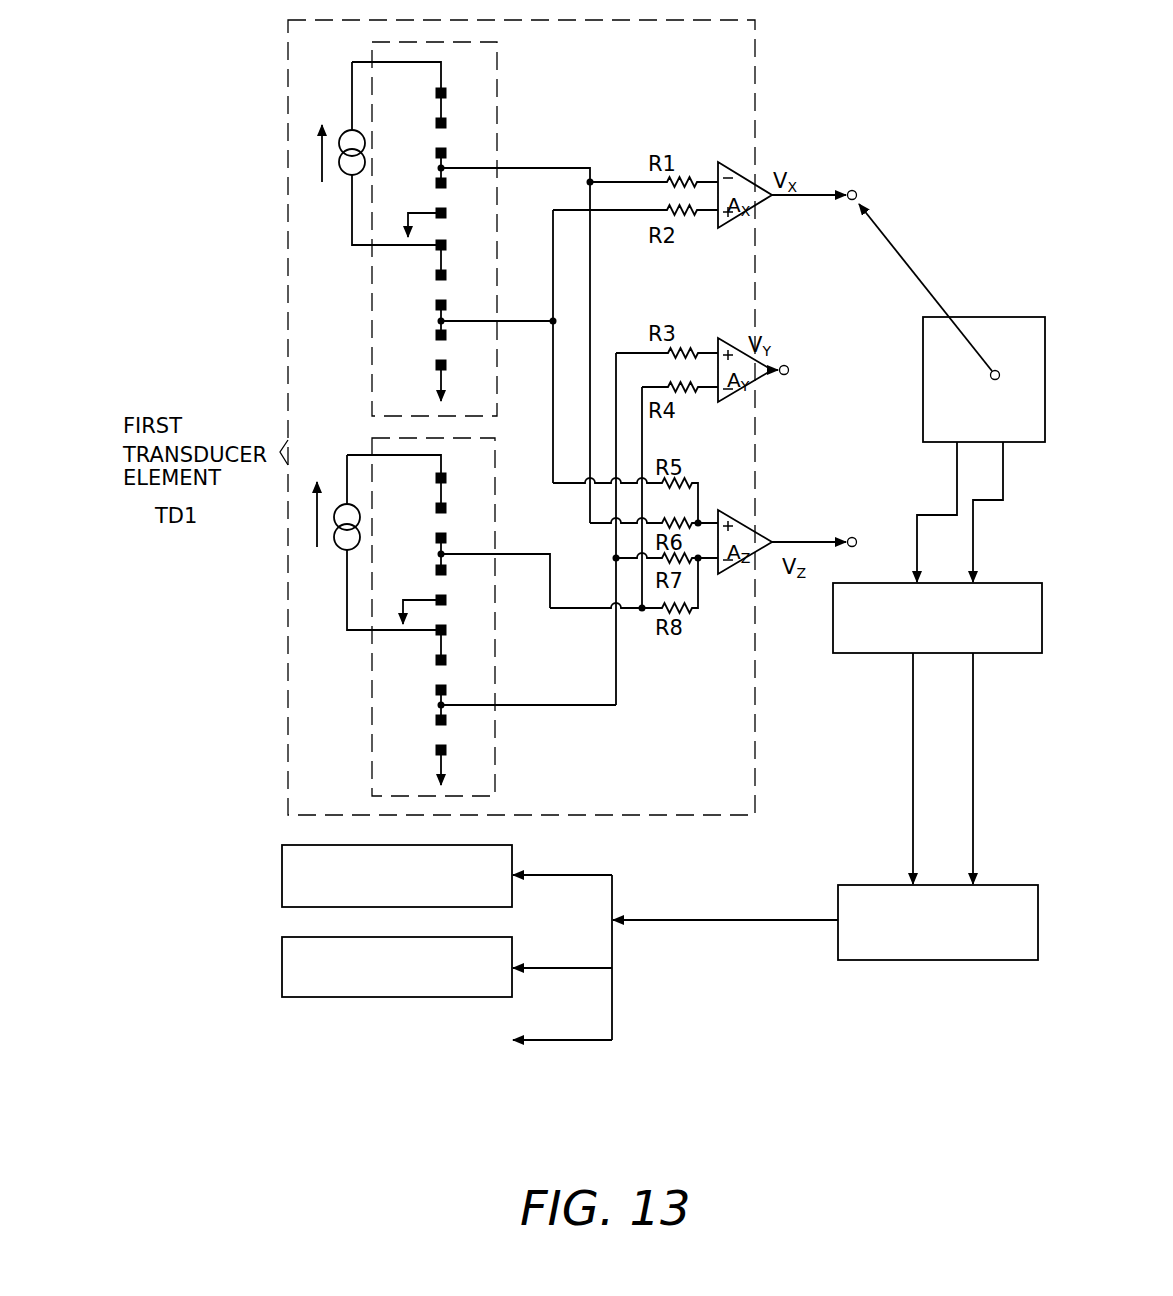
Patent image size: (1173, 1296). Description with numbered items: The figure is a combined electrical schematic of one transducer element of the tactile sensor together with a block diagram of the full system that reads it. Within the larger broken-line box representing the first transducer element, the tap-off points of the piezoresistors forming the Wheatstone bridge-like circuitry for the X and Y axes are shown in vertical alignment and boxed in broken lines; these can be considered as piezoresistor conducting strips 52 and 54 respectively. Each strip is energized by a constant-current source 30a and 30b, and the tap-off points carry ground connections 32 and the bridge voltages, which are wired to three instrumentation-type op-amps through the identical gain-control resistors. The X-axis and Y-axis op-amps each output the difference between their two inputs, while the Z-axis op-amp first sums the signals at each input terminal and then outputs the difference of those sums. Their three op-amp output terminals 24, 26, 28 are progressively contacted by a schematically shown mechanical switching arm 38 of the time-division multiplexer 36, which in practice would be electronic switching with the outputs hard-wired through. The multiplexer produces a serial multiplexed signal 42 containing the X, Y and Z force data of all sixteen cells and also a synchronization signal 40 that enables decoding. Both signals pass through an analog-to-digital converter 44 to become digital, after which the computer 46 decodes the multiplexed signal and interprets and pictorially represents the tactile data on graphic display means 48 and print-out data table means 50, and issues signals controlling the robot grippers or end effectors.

The op-amp output terminal 24 is at (855, 190).
The op-amp output terminal 26 is at (789, 364).
The op-amp output terminal 28 is at (851, 537).
The constant-current source 30a is at (347, 562).
The constant-current source 30b is at (352, 180).
The ground connection 32 is at (405, 230).
The time-division multiplexer 36 is at (1018, 348).
The mechanical switching arm 38 is at (912, 270).
The synchronization signal 40 is at (918, 565).
The multiplexed signal 42 is at (974, 545).
The analog-to-digital converter 44 is at (955, 614).
The computer 46 is at (962, 962).
The graphic display means 48 is at (398, 901).
The print-out data table means 50 is at (282, 975).
The piezoresistor conducting strip 52 is at (368, 735).
The piezoresistor conducting strip 54 is at (372, 343).